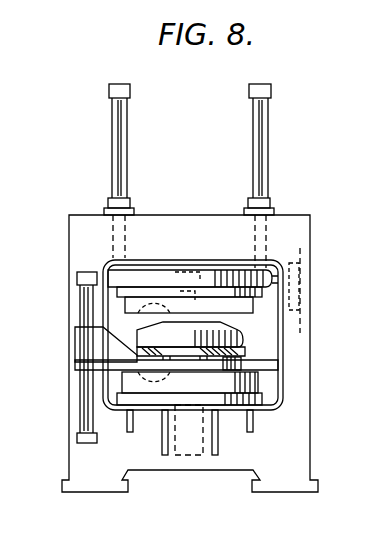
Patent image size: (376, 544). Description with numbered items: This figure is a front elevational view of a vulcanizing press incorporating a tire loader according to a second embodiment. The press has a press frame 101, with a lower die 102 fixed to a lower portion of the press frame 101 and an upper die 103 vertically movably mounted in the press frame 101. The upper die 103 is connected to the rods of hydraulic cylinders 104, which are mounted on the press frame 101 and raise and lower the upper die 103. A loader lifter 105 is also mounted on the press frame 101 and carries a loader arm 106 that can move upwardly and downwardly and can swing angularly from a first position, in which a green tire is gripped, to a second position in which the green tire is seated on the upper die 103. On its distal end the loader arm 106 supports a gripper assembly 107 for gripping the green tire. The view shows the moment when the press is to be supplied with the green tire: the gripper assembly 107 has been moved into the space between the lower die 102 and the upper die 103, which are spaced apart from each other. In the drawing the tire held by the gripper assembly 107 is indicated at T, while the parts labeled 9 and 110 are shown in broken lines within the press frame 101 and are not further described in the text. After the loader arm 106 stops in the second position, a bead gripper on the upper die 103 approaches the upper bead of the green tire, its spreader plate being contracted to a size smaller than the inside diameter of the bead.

The press frame 101 is at (310, 216).
The lower die 102 is at (272, 394).
The upper die 103 is at (252, 300).
The hydraulic cylinders 104 is at (260, 165).
The loader lifter 105 is at (80, 403).
The loader arm 106 is at (75, 346).
The gripper assembly 107 is at (240, 354).
The actuator 110 is at (200, 455).
The pin 9 is at (217, 270).
The workpiece T is at (243, 341).